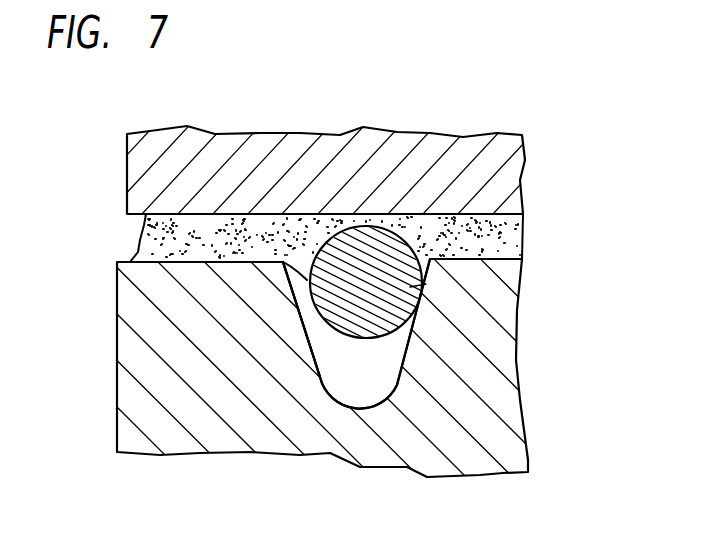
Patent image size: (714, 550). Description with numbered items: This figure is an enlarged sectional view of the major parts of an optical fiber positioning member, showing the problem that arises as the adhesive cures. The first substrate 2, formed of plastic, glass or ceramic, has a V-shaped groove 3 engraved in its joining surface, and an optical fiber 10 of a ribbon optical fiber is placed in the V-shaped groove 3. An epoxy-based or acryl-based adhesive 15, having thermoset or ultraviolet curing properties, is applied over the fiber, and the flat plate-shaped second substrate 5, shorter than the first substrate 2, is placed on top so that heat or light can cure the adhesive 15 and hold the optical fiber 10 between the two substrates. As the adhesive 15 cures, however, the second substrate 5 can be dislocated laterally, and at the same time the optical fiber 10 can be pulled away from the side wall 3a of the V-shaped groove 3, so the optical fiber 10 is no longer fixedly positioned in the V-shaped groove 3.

The second substrate 5 is at (467, 150).
The adhesive 15 is at (508, 237).
The optical fiber 10 is at (400, 287).
The first substrate 2 is at (378, 452).
The V-shaped groove 3 is at (363, 379).
The side wall 3a is at (307, 338).